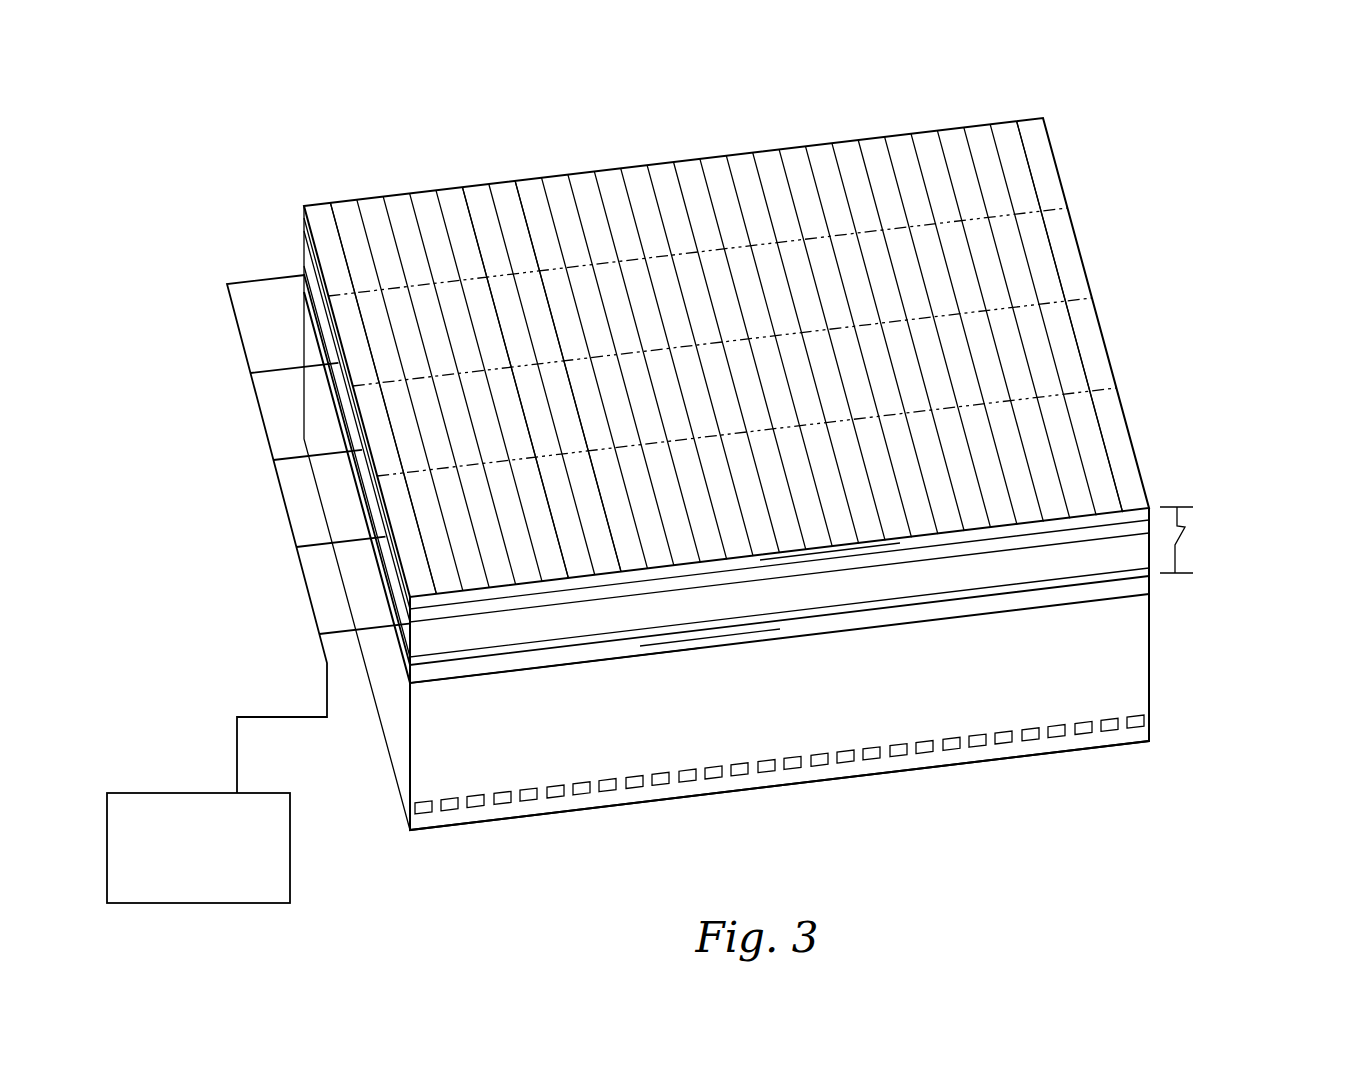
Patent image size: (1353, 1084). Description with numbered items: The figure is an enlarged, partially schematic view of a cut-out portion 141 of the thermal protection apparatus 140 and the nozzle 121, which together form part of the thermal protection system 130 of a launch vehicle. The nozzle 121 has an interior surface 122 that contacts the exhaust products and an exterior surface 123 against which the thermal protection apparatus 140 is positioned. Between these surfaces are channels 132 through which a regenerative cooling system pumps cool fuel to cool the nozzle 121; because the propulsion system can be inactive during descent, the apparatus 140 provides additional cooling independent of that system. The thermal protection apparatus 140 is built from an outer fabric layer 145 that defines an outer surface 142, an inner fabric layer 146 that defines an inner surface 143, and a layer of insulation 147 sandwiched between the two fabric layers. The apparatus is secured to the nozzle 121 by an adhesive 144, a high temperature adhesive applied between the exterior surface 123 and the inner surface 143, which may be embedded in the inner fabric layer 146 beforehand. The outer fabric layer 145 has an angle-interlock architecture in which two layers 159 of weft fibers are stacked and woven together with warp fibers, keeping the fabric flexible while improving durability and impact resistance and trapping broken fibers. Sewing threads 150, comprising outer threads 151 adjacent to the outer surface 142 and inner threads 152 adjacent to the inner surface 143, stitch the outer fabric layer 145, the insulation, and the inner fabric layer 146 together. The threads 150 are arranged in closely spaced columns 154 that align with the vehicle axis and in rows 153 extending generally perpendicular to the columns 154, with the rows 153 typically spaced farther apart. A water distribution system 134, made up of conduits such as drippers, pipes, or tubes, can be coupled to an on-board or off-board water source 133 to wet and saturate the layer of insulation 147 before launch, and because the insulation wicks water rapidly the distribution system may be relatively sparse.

The thermal protection system 130 is at (215, 203).
The nozzle 121 is at (1097, 645).
The interior surface 122 is at (992, 768).
The channels 132 is at (1127, 730).
The thermal protection apparatus 140 is at (1023, 227).
The sewing threads 150 is at (977, 213).
The outer threads 151 is at (1018, 316).
The rows 153 is at (390, 280).
The columns 154 is at (548, 212).
The outer surface 142 is at (740, 258).
The outer fabric layer 145 is at (1028, 530).
The layers of weft fibers 159 is at (848, 562).
The layer of insulation 147 is at (1110, 555).
The inner fabric layer 146 is at (1118, 575).
The adhesive 144 is at (1128, 593).
The inner surface 143 is at (622, 640).
The inner threads 152 is at (692, 635).
The exterior surface 123 is at (472, 672).
The cut-out portion 141 is at (255, 463).
The water distribution system 134 is at (315, 578).
The water source 133 is at (292, 866).